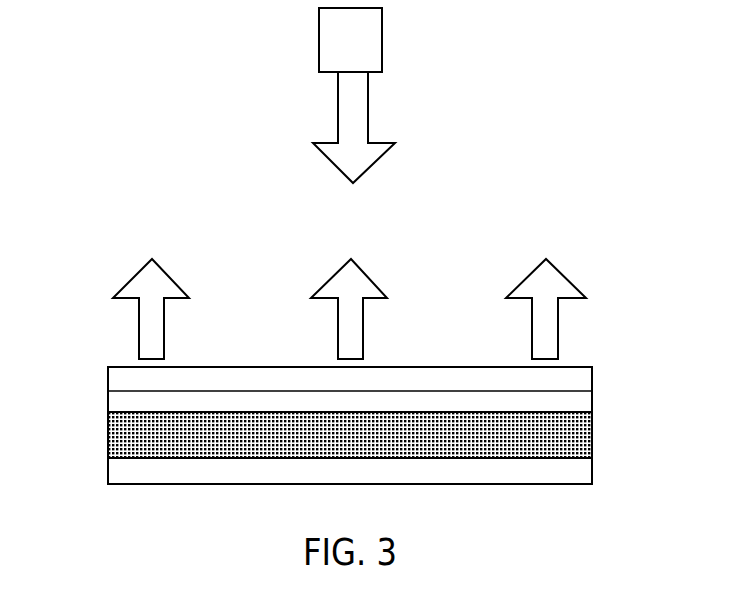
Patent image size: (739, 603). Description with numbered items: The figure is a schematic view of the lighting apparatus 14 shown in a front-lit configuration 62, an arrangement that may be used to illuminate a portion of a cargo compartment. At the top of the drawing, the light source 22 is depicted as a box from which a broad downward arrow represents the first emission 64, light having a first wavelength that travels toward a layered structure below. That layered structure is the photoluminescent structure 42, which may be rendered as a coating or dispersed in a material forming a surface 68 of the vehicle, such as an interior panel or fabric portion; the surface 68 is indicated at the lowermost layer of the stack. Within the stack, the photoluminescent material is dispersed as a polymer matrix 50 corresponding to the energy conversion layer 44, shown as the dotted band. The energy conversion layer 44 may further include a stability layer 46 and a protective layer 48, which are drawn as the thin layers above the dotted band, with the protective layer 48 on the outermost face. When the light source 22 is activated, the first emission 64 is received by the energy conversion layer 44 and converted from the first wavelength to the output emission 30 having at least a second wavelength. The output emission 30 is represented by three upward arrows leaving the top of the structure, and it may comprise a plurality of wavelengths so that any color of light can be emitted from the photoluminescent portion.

The light source 22 is at (338, 50).
The first emission 64 is at (345, 106).
The front-lit configuration 62 is at (553, 72).
The lighting apparatus 14 is at (631, 38).
The output emission 30 is at (159, 328).
The photoluminescent structure 42 is at (95, 440).
The protective layer 48 is at (583, 377).
The stability layer 46 is at (585, 401).
The energy conversion layer 44 is at (582, 437).
The surface 68 is at (517, 473).
The polymer matrix 50 is at (95, 465).